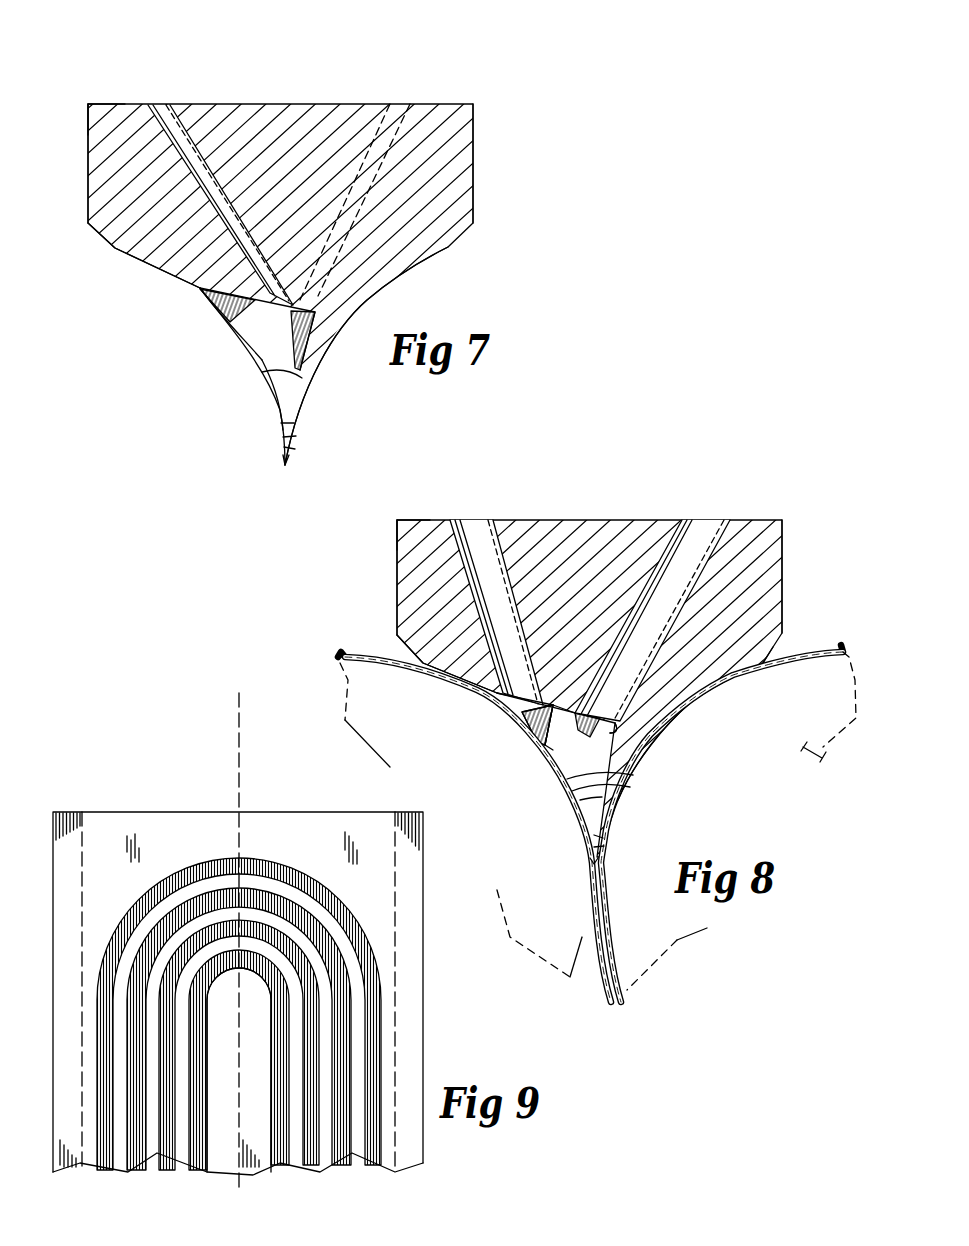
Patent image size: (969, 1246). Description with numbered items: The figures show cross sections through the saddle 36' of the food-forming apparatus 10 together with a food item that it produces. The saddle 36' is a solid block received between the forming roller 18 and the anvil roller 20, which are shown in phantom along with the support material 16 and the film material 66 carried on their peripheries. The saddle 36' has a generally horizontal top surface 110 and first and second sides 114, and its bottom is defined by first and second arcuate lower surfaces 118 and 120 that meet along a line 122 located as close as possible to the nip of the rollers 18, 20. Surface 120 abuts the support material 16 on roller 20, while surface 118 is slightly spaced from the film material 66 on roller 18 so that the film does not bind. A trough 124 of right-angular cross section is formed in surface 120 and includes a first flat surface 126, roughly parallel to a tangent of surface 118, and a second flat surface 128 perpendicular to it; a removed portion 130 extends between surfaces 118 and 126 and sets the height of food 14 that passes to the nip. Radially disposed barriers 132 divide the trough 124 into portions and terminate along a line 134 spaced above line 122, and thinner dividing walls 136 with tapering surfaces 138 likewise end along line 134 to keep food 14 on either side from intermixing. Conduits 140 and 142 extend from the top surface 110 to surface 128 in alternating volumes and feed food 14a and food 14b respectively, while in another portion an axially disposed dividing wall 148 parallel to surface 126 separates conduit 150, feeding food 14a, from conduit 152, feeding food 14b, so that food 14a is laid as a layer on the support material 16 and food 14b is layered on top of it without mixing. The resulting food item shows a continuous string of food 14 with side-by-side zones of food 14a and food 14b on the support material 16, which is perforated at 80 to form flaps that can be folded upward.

In FIG. 8, the apparatus 10 is at (643, 489).
In FIG. 8, the food 14 is at (620, 1010).
In FIG. 9, the food 14 is at (246, 850).
In FIG. 8, the food 14a is at (630, 777).
In FIG. 9, the food 14a is at (297, 903).
In FIG. 8, the food 14b is at (628, 790).
In FIG. 9, the food 14b is at (180, 907).
In FIG. 8, the support material 16 is at (350, 653).
In FIG. 9, the support material 16 is at (128, 822).
In FIG. 8, the roller 18 is at (828, 714).
In FIG. 8, the roller 20 is at (364, 698).
In FIG. 7, the saddle 36' is at (87, 84).
In FIG. 8, the saddle 36' is at (388, 506).
In FIG. 8, the film material 66 is at (813, 650).
In FIG. 9, the perforation 80 is at (82, 840).
In FIG. 7, the top surface 110 is at (253, 104).
In FIG. 8, the top surface 110 is at (583, 520).
In FIG. 7, the sides 114 is at (88, 143).
In FIG. 8, the sides 114 is at (397, 540).
In FIG. 7, the first arcuate lower surface 118 is at (376, 303).
In FIG. 8, the first arcuate lower surface 118 is at (727, 677).
In FIG. 7, the second arcuate lower surface 120 is at (148, 264).
In FIG. 8, the second arcuate lower surface 120 is at (440, 680).
In FIG. 7, the line 122 is at (282, 473).
In FIG. 8, the line 122 is at (595, 865).
In FIG. 7, the trough 124 is at (252, 334).
In FIG. 8, the trough 124 is at (527, 720).
In FIG. 7, the first flat surface 126 is at (262, 372).
In FIG. 8, the first flat surface 126 is at (580, 800).
In FIG. 7, the second flat surface 128 is at (197, 290).
In FIG. 8, the second flat surface 128 is at (497, 702).
In FIG. 7, the removed portion 130 is at (283, 423).
In FIG. 8, the removed portion 130 is at (602, 837).
In FIG. 8, the barriers 132 is at (503, 710).
In FIG. 7, the line 134 is at (290, 448).
In FIG. 7, the dividing walls 136 is at (227, 323).
In FIG. 7, the tapering surfaces 138 is at (292, 441).
In FIG. 8, the tapering surfaces 138 is at (603, 846).
In FIG. 7, the conduits 140 is at (392, 112).
In FIG. 7, the conduits 142 is at (168, 110).
In FIG. 8, the dividing wall 148 is at (553, 750).
In FIG. 8, the conduit 150 is at (478, 527).
In FIG. 8, the conduit 152 is at (710, 527).